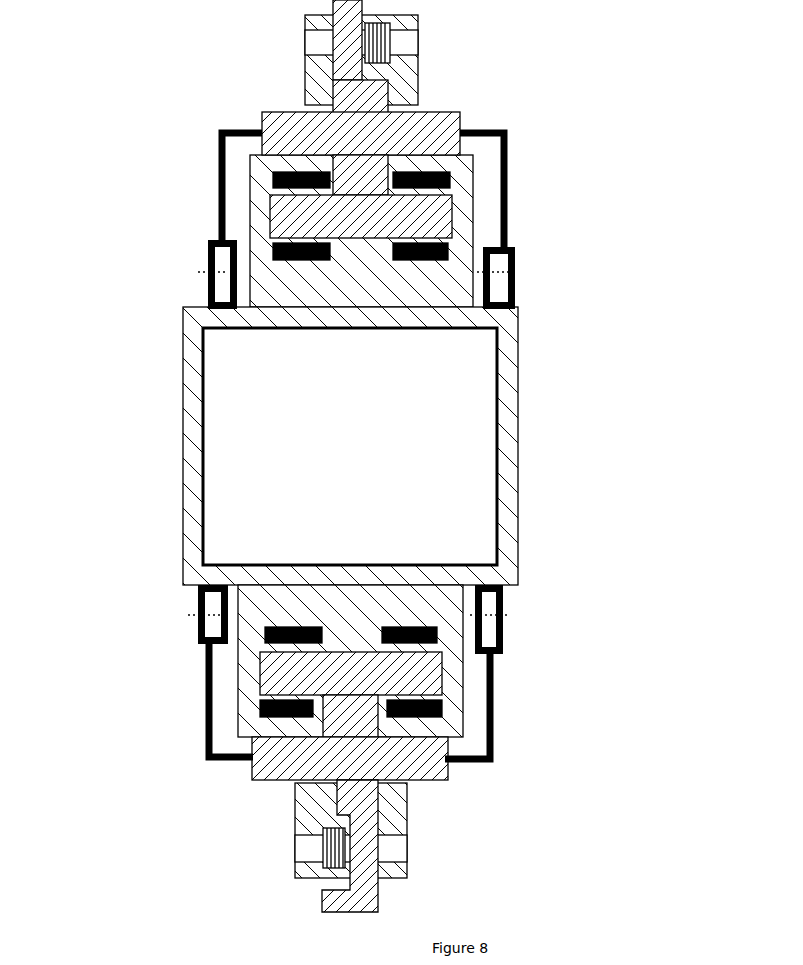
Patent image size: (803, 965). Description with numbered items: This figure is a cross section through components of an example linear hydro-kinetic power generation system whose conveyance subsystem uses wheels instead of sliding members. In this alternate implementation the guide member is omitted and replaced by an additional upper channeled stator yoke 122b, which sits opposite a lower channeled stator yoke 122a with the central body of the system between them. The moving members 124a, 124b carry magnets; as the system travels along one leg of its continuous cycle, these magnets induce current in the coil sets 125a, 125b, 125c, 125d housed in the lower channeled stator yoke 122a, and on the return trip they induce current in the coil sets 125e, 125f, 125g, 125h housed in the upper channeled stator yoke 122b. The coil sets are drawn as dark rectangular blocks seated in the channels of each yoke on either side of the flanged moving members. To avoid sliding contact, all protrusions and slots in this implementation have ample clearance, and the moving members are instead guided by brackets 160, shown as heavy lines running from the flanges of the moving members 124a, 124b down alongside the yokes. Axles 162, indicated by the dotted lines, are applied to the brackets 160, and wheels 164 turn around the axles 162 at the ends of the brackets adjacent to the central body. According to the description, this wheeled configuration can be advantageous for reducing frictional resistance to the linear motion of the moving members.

The lower channeled stator yoke 122a is at (225, 699).
The upper channeled stator yoke 122b is at (484, 210).
The moving member 124a is at (243, 773).
The moving member 124b is at (447, 104).
The coil set 125a is at (447, 723).
The coil set 125b is at (446, 644).
The coil set 125c is at (253, 646).
The coil set 125d is at (253, 720).
The coil set 125e is at (451, 276).
The coil set 125f is at (462, 170).
The coil set 125g is at (262, 176).
The coil set 125h is at (265, 265).
The bracket 160 is at (207, 210).
The axle 162 is at (177, 272).
The wheel 164 is at (197, 245).